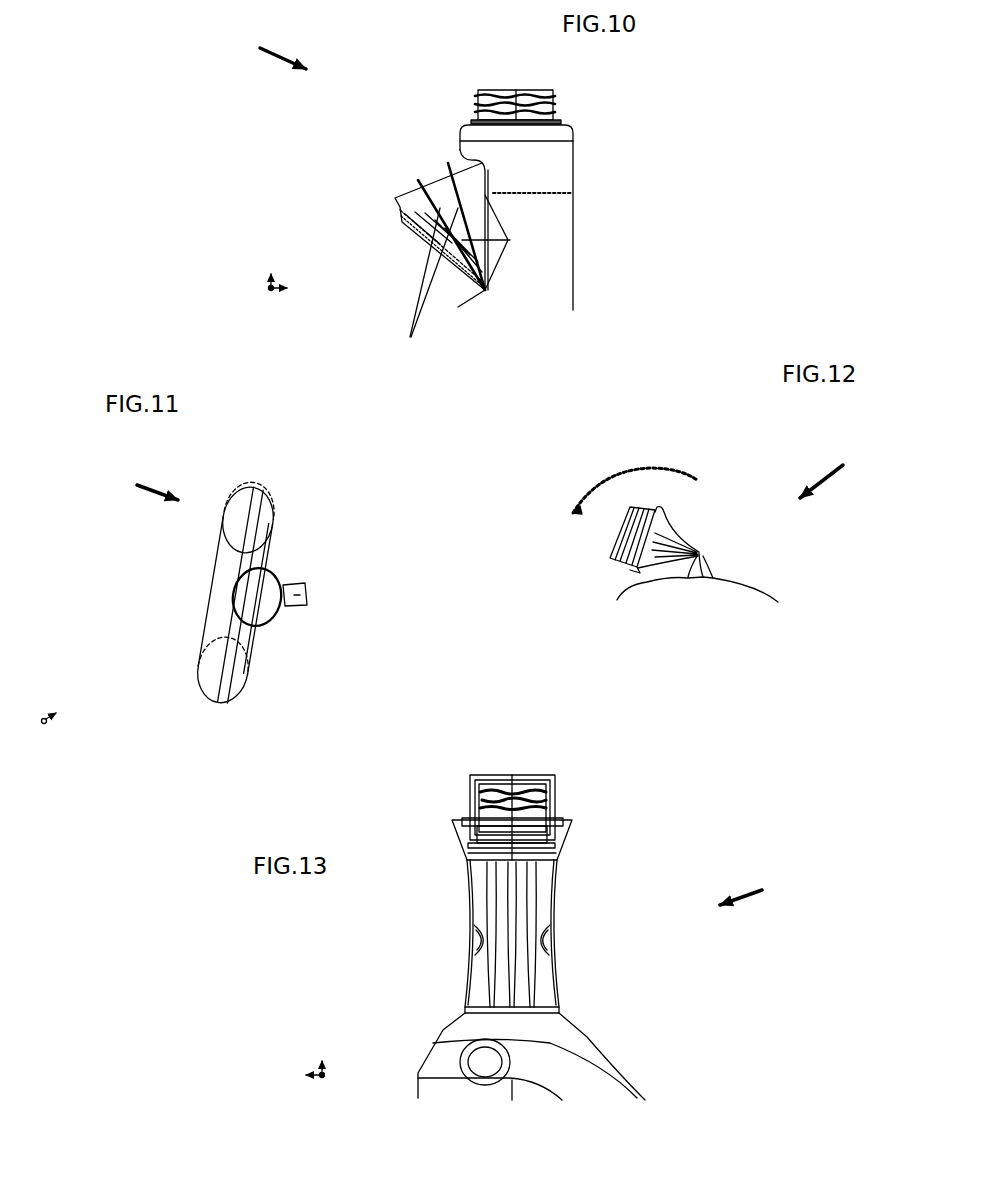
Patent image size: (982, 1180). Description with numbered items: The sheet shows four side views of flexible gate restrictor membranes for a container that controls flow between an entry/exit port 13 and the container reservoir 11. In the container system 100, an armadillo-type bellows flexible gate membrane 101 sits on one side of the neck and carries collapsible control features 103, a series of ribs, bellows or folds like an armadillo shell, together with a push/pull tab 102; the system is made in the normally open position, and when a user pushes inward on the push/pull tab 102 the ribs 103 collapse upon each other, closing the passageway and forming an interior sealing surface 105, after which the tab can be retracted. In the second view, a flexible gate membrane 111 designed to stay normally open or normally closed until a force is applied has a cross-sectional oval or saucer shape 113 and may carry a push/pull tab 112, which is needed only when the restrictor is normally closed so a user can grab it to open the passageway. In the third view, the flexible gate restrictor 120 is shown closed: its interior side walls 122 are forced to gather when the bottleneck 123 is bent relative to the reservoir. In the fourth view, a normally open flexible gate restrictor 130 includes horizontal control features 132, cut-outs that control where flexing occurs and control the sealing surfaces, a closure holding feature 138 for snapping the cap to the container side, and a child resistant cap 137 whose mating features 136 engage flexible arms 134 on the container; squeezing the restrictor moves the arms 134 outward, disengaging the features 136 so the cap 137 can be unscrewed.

In FIG. 10, the container system 100 is at (259, 47).
In FIG. 10, the container reservoir 11 is at (537, 275).
In FIG. 11, the container reservoir 11 is at (282, 680).
In FIG. 12, the container reservoir 11 is at (762, 615).
In FIG. 10, the entry/exit port 13 is at (520, 75).
In FIG. 11, the entry/exit port 13 is at (247, 517).
In FIG. 12, the entry/exit port 13 is at (553, 550).
In FIG. 10, the flexible gate membrane 101 is at (408, 193).
In FIG. 10, the push/pull tab 102 is at (395, 228).
In FIG. 10, the collapsible control features 103 is at (416, 286).
In FIG. 10, the interior sealing surface 105 is at (576, 192).
In FIG. 11, the flexible gate membrane 111 is at (132, 482).
In FIG. 11, the push/pull tab 112 is at (301, 581).
In FIG. 11, the cross-sectional oval or saucer shape 113 is at (217, 597).
In FIG. 12, the flexible gate restrictor 120 is at (842, 473).
In FIG. 12, the interior side walls 122 is at (715, 550).
In FIG. 12, the bottleneck 123 is at (632, 570).
In FIG. 13, the flexible gate restrictor 130 is at (762, 895).
In FIG. 13, the horizontal control features 132 is at (478, 940).
In FIG. 13, the flexible arms 134 is at (458, 843).
In FIG. 13, the mating features 136 is at (462, 820).
In FIG. 13, the cap 137 is at (540, 760).
In FIG. 13, the closure holding feature 138 is at (458, 1050).